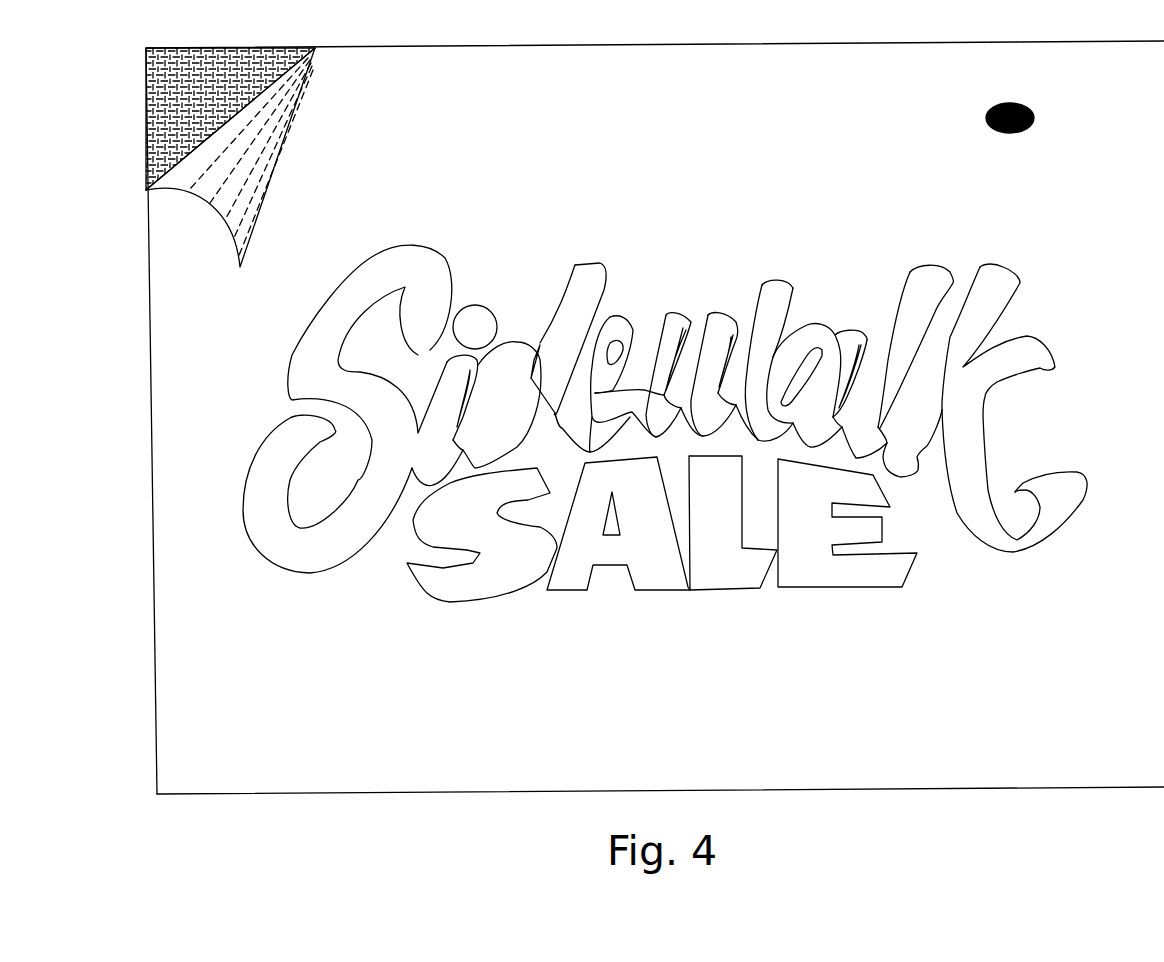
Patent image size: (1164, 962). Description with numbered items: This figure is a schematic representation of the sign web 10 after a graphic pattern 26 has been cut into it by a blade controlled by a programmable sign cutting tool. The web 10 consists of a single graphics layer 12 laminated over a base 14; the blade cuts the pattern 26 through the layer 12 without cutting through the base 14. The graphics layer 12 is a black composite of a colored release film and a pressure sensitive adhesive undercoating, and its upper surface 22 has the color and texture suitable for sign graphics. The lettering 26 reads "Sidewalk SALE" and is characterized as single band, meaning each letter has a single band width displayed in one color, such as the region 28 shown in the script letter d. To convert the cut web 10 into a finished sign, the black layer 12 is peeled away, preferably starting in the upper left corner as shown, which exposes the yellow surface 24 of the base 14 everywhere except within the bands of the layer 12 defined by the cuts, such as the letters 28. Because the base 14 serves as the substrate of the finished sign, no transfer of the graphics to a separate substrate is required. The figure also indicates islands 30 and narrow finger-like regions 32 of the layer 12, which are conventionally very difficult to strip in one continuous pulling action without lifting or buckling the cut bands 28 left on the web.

The sign web 10 is at (845, 37).
The graphics layer 12 is at (296, 122).
The base 14 is at (194, 50).
The upper surface 22 is at (491, 768).
The yellow surface 24 is at (267, 70).
The graphic pattern 26 is at (383, 252).
The single band region 28 is at (576, 283).
The islands 30 is at (638, 327).
The finger-like regions 32 is at (748, 343).